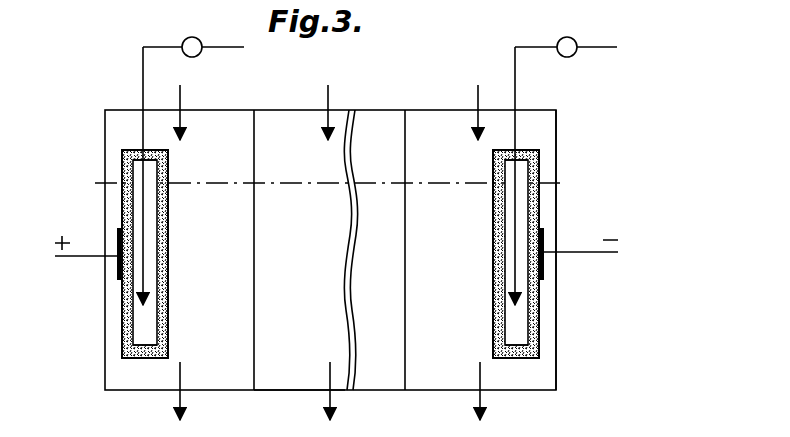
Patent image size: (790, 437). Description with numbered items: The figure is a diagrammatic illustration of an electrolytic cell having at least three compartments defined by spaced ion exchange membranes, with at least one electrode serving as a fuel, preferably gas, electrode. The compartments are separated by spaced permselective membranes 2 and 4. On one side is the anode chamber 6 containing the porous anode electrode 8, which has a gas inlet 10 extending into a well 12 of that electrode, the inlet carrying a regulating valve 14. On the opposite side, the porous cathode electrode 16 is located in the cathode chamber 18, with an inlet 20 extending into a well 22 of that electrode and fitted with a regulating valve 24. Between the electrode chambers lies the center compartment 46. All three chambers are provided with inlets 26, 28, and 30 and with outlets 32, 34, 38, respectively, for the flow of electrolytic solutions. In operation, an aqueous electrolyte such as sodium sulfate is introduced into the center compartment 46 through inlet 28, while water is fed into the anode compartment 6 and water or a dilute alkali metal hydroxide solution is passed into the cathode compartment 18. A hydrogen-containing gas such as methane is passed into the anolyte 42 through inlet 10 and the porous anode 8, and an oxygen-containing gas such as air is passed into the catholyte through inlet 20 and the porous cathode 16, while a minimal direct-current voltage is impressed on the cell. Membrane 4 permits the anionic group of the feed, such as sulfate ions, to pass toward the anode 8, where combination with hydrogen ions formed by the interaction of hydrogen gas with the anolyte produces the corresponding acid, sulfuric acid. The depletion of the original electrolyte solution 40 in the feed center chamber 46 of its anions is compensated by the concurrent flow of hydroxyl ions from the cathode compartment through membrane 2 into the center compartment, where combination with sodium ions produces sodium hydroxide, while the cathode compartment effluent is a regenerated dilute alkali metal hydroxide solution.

The permselective membrane 2 is at (406, 240).
The permselective membrane 4 is at (255, 250).
The anode chamber 6 is at (120, 243).
The porous anode electrode 8 is at (122, 198).
The gas inlet 10 is at (142, 78).
The well 12 is at (140, 332).
The regulating valve 14 is at (190, 37).
The porous cathode electrode 16 is at (538, 293).
The cathode chamber 18 is at (543, 133).
The inlet 20 is at (517, 73).
The well 22 is at (520, 333).
The regulating valve 24 is at (580, 28).
The inlet 26 is at (182, 99).
The inlet 28 is at (326, 100).
The inlet 30 is at (476, 90).
The outlet 32 is at (178, 404).
The outlet 34 is at (333, 395).
The outlet 38 is at (483, 395).
The electrolyte solution 40 is at (313, 364).
The anolyte 42 is at (122, 377).
The center compartment 46 is at (384, 116).